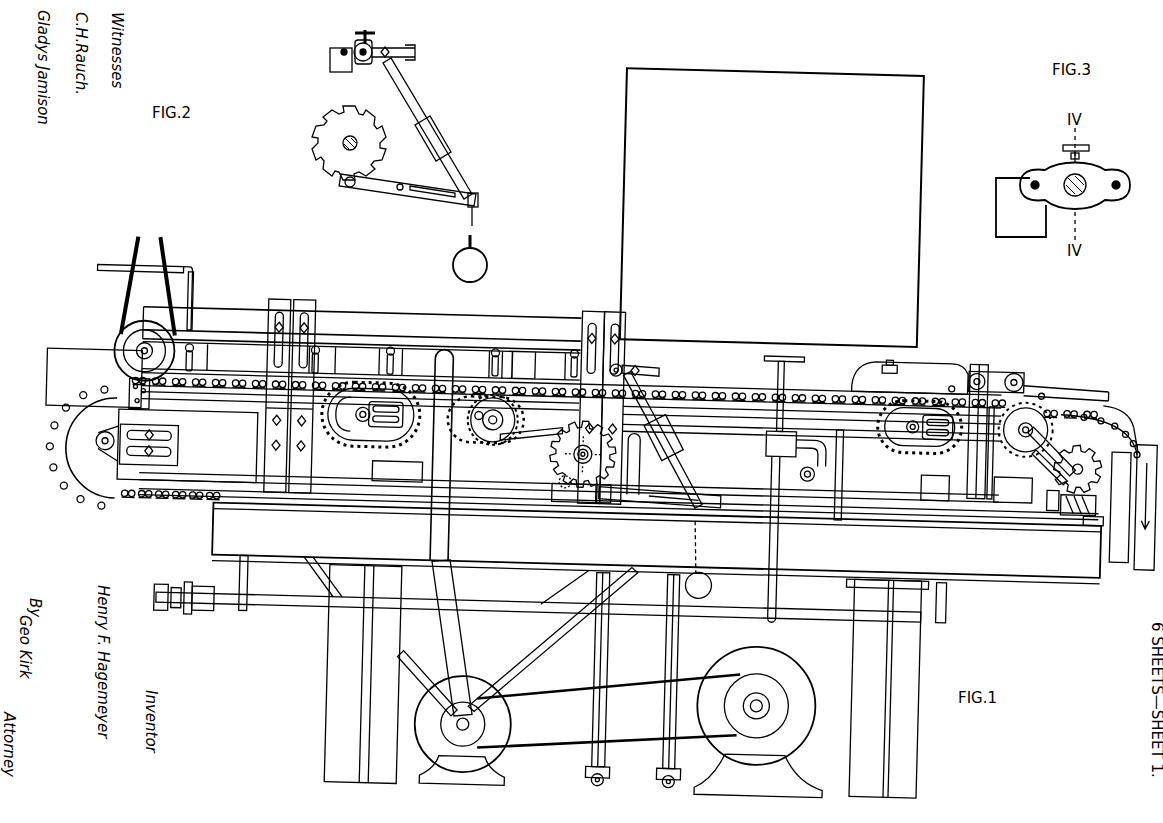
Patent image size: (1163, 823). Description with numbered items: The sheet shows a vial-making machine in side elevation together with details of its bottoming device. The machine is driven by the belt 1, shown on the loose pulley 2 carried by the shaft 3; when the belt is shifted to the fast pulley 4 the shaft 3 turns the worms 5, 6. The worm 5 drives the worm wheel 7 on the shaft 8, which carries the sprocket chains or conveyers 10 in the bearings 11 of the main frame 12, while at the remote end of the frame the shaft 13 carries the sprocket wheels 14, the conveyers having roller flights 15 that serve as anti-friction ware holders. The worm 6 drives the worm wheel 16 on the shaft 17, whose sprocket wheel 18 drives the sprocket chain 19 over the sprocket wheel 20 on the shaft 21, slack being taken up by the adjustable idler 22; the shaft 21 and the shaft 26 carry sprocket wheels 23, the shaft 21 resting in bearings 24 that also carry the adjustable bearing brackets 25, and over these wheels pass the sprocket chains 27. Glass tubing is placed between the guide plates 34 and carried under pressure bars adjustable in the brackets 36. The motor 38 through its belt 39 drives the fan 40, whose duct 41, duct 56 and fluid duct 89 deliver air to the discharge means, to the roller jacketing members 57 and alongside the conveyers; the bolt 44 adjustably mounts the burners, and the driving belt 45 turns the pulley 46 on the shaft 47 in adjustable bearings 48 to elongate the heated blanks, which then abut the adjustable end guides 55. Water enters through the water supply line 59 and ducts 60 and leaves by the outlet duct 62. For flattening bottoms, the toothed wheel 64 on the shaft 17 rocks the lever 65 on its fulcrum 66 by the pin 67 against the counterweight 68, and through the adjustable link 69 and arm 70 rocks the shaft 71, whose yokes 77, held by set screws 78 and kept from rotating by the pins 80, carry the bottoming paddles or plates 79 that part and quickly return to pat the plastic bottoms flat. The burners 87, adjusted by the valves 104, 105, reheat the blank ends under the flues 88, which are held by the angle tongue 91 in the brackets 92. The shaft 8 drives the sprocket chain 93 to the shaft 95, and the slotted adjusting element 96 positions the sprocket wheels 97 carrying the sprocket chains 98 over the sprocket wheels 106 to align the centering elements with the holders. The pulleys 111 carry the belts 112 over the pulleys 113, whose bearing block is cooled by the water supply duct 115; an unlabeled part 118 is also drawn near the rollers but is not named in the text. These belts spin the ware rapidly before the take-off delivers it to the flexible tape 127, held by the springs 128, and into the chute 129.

In FIG. 1, the belt 1 is at (1146, 558).
In FIG. 1, the loose pulley 2 is at (1128, 552).
In FIG. 1, the shaft 3 is at (890, 502).
In FIG. 1, the fast pulley 4 is at (1108, 560).
In FIG. 1, the worm 5 is at (1062, 500).
In FIG. 1, the worm 6 is at (577, 504).
In FIG. 1, the worm wheel 7 is at (1060, 504).
In FIG. 1, the shaft 8 is at (1082, 484).
In FIG. 1, the sprocket chains or conveyers 10 is at (110, 510).
In FIG. 1, the bearings 11 is at (140, 500).
In FIG. 1, the main frame 12 is at (216, 546).
In FIG. 1, the shaft 13 is at (98, 466).
In FIG. 1, the sprocket wheels 14 is at (135, 490).
In FIG. 1, the roller flights 15 is at (48, 454).
In FIG. 1, the worm wheel 16 is at (563, 492).
In FIG. 1, the shaft 17 is at (605, 485).
In FIG. 2, the shaft 17 is at (347, 146).
In FIG. 1, the sprocket wheel 18 is at (556, 430).
In FIG. 1, the sprocket chain 19 is at (532, 428).
In FIG. 1, the sprocket wheel 20 is at (498, 447).
In FIG. 1, the shaft 21 is at (487, 435).
In FIG. 1, the adjustable idler 22 is at (510, 445).
In FIG. 1, the sprocket wheels 23 is at (468, 445).
In FIG. 1, the bearings 24 is at (462, 400).
In FIG. 1, the adjustable bearing brackets 25 is at (360, 437).
In FIG. 1, the shaft 26 is at (355, 425).
In FIG. 1, the sprocket chains 27 is at (385, 445).
In FIG. 1, the guide plates 34 is at (57, 364).
In FIG. 1, the brackets 36 is at (305, 318).
In FIG. 1, the motor 38 is at (810, 732).
In FIG. 1, the belt 39 is at (610, 740).
In FIG. 1, the fan 40 is at (518, 762).
In FIG. 1, the duct 41 is at (307, 600).
In FIG. 1, the bolt 44 is at (820, 467).
In FIG. 1, the driving belt 45 is at (164, 292).
In FIG. 1, the pulley 46 is at (114, 358).
In FIG. 1, the shaft 47 is at (138, 360).
In FIG. 1, the adjustable bearings 48 is at (125, 408).
In FIG. 1, the adjustable end guides 55 is at (565, 432).
In FIG. 1, the duct 56 is at (440, 660).
In FIG. 1, the roller jacketing members 57 is at (410, 352).
In FIG. 1, the water supply line 59 is at (105, 280).
In FIG. 1, the ducts 60 is at (190, 306).
In FIG. 1, the outlet duct 62 is at (948, 379).
In FIG. 1, the toothed wheel 64 is at (566, 470).
In FIG. 2, the toothed wheel 64 is at (312, 148).
In FIG. 1, the lever 65 is at (706, 500).
In FIG. 2, the lever 65 is at (380, 194).
In FIG. 2, the fulcrum 66 is at (401, 184).
In FIG. 2, the pin 67 is at (351, 188).
In FIG. 1, the counterweight 68 is at (715, 585).
In FIG. 2, the counterweight 68 is at (480, 252).
In FIG. 1, the adjustable link 69 is at (680, 455).
In FIG. 2, the adjustable link 69 is at (449, 164).
In FIG. 1, the arm 70 is at (660, 371).
In FIG. 2, the arm 70 is at (415, 55).
In FIG. 1, the shaft 71 is at (622, 368).
In FIG. 2, the shaft 71 is at (372, 52).
In FIG. 3, the shaft 71 is at (1080, 192).
In FIG. 2, the yokes 77 is at (354, 46).
In FIG. 2, the set screws 78 is at (365, 30).
In FIG. 3, the set screws 78 is at (1090, 147).
In FIG. 2, the formers, bottoming paddles or plates 79 is at (330, 68).
In FIG. 3, the formers, bottoming paddles or plates 79 is at (1044, 238).
In FIG. 2, the pins 80 is at (340, 51).
In FIG. 3, the pins 80 is at (1035, 181).
In FIG. 1, the burners 87 is at (708, 412).
In FIG. 1, the flues 88 is at (622, 231).
In FIG. 1, the fluid duct 89 is at (540, 652).
In FIG. 1, the angle tongue 91 is at (880, 356).
In FIG. 1, the brackets 92 is at (895, 358).
In FIG. 1, the sprocket chain 93 is at (1052, 448).
In FIG. 1, the shaft 95 is at (1026, 445).
In FIG. 1, the slotted adjusting element 96 is at (474, 422).
In FIG. 1, the sprocket wheels 97 is at (1000, 494).
In FIG. 1, the sprocket chains 98 is at (905, 444).
In FIG. 1, the valve 104 is at (790, 359).
In FIG. 1, the valve 105 is at (835, 475).
In FIG. 1, the sprocket wheels 106 is at (936, 495).
In FIG. 1, the pulleys 111 is at (1022, 370).
In FIG. 1, the belts 112 is at (985, 365).
In FIG. 1, the pulleys 113 is at (972, 363).
In FIG. 1, the water supply duct 115 is at (942, 354).
In FIG. 1, the roller shaft 118 is at (1002, 366).
In FIG. 1, the flexible tape 127 is at (1050, 385).
In FIG. 1, the springs 128 is at (1110, 394).
In FIG. 1, the chute 129 is at (1128, 412).